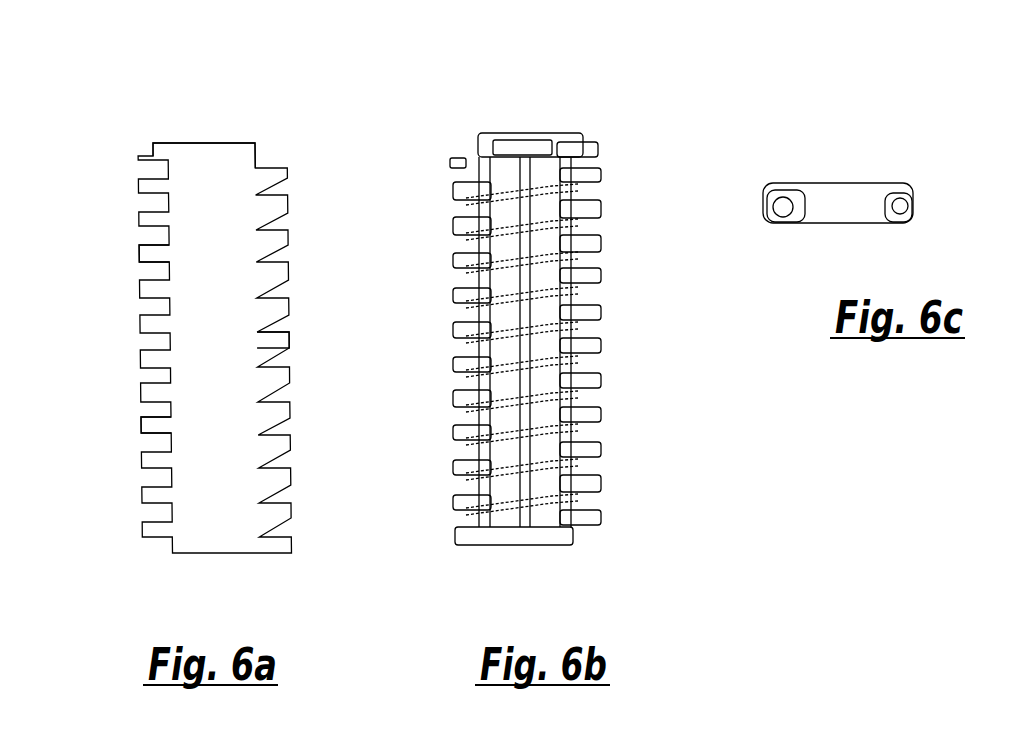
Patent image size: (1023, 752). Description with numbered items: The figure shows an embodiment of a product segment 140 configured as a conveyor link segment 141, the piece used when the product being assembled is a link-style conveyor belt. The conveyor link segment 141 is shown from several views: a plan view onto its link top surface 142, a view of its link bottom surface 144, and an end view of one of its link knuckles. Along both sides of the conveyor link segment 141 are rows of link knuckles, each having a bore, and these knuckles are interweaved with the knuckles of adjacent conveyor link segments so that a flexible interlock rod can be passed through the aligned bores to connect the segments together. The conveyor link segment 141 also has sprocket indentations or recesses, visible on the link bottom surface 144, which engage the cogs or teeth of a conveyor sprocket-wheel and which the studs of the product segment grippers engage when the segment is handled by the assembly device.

In FIG. 6A, the product segment 140 is at (207, 120).
In FIG. 6A, the conveyor link segment 141 is at (210, 158).
In FIG. 6B, the conveyor link segment 141 is at (528, 135).
In FIG. 6C, the conveyor link segment 141 is at (853, 190).
In FIG. 6A, the link top surface 142 is at (202, 440).
In FIG. 6B, the link bottom surface 144 is at (517, 460).